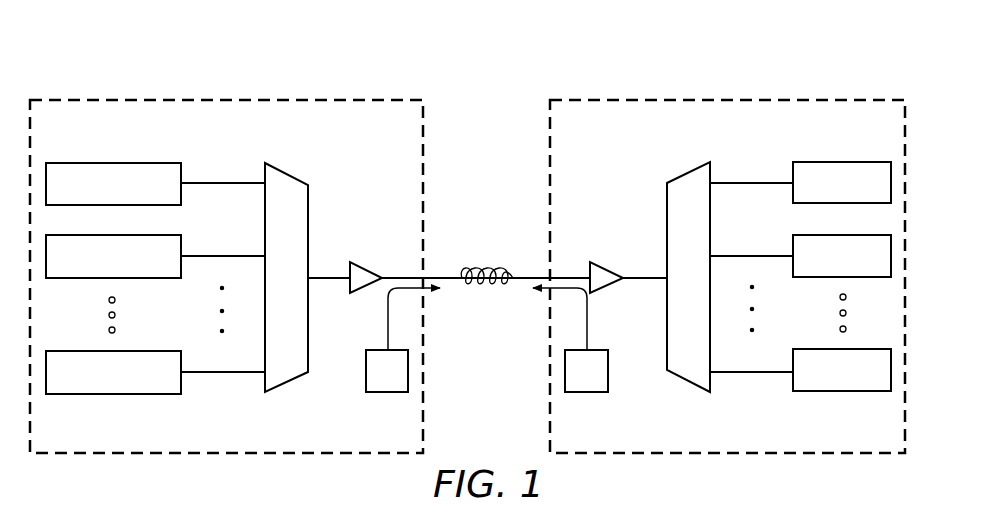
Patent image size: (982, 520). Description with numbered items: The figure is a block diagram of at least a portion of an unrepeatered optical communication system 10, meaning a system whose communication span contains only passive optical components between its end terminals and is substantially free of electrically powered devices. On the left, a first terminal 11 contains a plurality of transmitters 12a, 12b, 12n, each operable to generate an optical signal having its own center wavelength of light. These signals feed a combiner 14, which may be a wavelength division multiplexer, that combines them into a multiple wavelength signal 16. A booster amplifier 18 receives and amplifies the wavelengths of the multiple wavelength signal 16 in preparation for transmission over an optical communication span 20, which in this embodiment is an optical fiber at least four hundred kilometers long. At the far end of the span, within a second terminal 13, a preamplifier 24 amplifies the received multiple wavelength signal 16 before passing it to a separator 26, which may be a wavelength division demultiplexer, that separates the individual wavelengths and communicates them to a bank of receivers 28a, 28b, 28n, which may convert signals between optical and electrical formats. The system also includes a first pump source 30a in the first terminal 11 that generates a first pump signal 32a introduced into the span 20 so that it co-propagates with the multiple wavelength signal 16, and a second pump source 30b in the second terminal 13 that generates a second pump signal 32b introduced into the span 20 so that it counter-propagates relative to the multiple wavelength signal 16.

The unrepeatered optical communication system 10 is at (460, 70).
The first terminal 11 is at (185, 100).
The transmitter 12a is at (112, 163).
The transmitter 12b is at (76, 278).
The transmitter 12n is at (110, 394).
The second terminal 13 is at (757, 100).
The combiner 14 is at (285, 172).
The multiple wavelength signal 16 is at (325, 278).
The booster amplifier 18 is at (370, 265).
The optical communication span 20 is at (524, 80).
The preamplifier 24 is at (610, 268).
The separator 26 is at (690, 172).
The receiver 28a is at (843, 162).
The receiver 28b is at (862, 277).
The receiver 28n is at (843, 391).
The first pump source 30a is at (386, 392).
The second pump source 30b is at (590, 392).
The first pump signal 32a is at (388, 320).
The second pump signal 32b is at (587, 320).